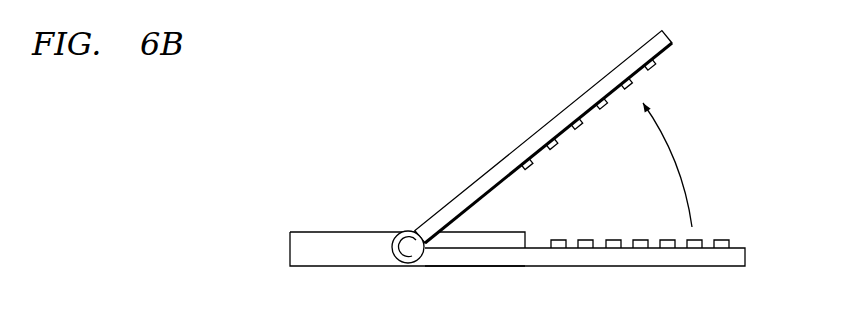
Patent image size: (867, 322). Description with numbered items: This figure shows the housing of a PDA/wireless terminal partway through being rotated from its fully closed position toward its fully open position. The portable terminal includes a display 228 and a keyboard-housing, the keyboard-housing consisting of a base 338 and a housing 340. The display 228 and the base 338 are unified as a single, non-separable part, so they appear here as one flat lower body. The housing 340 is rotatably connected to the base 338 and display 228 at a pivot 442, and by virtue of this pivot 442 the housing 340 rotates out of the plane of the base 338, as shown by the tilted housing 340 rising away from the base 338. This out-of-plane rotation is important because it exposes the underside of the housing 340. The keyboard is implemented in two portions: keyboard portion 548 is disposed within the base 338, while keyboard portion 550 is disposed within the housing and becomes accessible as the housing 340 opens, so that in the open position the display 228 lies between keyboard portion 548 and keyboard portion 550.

The display 228 is at (332, 242).
The base 338 is at (745, 258).
The housing 340 is at (613, 70).
The pivot 442 is at (413, 222).
The keyboard portion 548 is at (603, 233).
The keyboard portion 550 is at (590, 127).